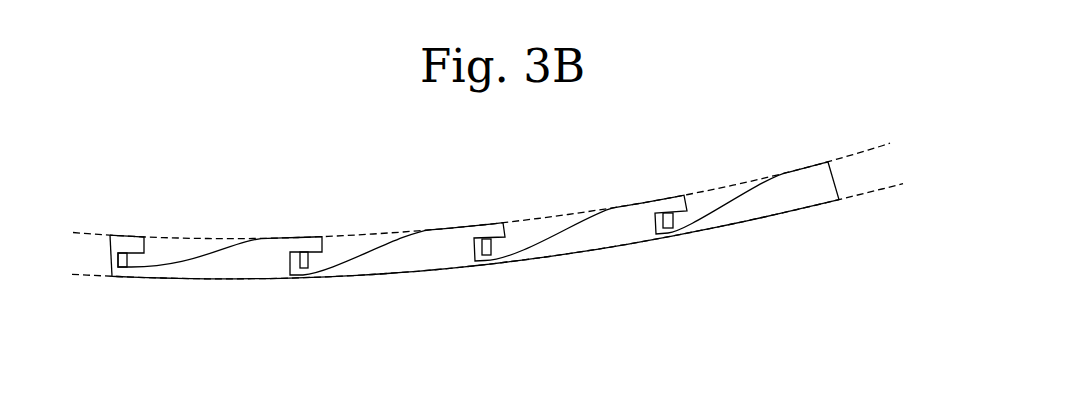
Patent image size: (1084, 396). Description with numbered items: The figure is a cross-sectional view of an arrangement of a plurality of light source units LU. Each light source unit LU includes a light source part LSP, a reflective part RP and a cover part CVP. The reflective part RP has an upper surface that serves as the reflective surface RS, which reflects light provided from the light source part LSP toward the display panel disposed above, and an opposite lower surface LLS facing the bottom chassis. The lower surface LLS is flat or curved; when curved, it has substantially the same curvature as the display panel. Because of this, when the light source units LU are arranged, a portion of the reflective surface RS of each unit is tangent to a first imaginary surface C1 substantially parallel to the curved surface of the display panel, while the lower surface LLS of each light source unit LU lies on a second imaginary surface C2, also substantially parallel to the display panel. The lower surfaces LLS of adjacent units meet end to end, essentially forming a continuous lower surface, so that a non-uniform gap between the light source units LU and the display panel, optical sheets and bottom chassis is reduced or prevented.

The cover part CVP is at (110, 237).
The light source part LSP is at (121, 257).
The reflective part RP is at (198, 288).
The light source unit LU is at (175, 305).
The reflective surface RS is at (413, 235).
The lower surface LLS is at (402, 275).
The first imaginary surface C1 is at (495, 186).
The second imaginary surface C2 is at (501, 224).